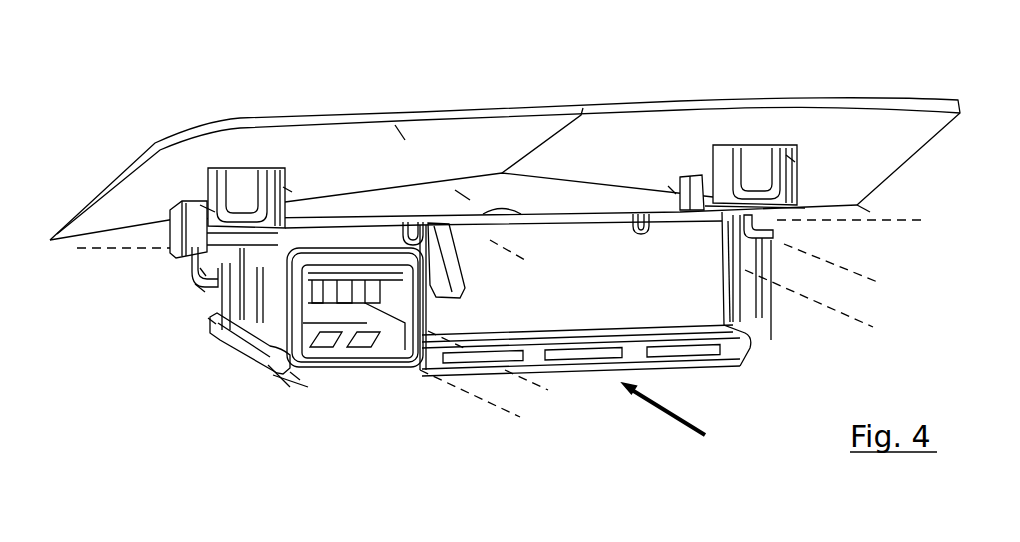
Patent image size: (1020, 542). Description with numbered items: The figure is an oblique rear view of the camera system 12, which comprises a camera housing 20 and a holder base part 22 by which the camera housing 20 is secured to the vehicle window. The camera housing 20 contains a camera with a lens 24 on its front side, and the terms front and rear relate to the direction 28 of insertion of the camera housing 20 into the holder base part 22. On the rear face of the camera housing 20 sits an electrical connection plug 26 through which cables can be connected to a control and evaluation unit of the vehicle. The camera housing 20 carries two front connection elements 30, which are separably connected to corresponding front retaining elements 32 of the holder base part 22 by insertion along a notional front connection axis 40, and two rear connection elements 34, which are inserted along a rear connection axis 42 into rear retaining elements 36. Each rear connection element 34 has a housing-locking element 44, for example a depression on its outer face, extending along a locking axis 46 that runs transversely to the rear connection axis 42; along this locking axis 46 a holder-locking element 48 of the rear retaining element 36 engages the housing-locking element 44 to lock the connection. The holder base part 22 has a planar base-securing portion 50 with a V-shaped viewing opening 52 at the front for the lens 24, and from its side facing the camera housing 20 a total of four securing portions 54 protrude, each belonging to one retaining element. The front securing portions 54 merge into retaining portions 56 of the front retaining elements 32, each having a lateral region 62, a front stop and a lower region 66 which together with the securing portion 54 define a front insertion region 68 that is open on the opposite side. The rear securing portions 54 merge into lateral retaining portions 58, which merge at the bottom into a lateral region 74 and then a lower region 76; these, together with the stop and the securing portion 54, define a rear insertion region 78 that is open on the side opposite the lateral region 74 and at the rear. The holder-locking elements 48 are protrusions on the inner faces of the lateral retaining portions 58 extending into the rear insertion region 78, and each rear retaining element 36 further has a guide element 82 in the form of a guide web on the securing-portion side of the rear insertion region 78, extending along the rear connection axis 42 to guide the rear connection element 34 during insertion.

The camera system 12 is at (105, 60).
The camera housing 20 is at (562, 384).
The holder base part 22 is at (556, 103).
The lens 24 is at (500, 200).
The connector receptacle 26 is at (360, 372).
The direction of insertion 28 is at (672, 412).
The front connection element 30 is at (208, 338).
The front retaining element 32 is at (163, 215).
The rear connection element 34 is at (292, 370).
The rear retaining element 36 is at (247, 180).
The front connection axis 40 is at (468, 385).
The rear connection axis 42 is at (478, 350).
The housing-locking element 44 is at (263, 230).
The locking axis 46 is at (87, 250).
The holder-locking element 48 is at (200, 292).
The base-securing portion 50 is at (401, 137).
The viewing opening 52 is at (462, 197).
The securing portion 54 is at (283, 187).
The retaining portion 56 is at (195, 287).
The lateral retaining portion 58 is at (185, 260).
The lateral region 62 is at (200, 270).
The lower region 66 is at (210, 320).
The front insertion region 68 is at (205, 205).
The lateral region 74 is at (858, 212).
The lower region 76 is at (736, 323).
The rear insertion region 78 is at (300, 210).
The guide element 82 is at (673, 213).